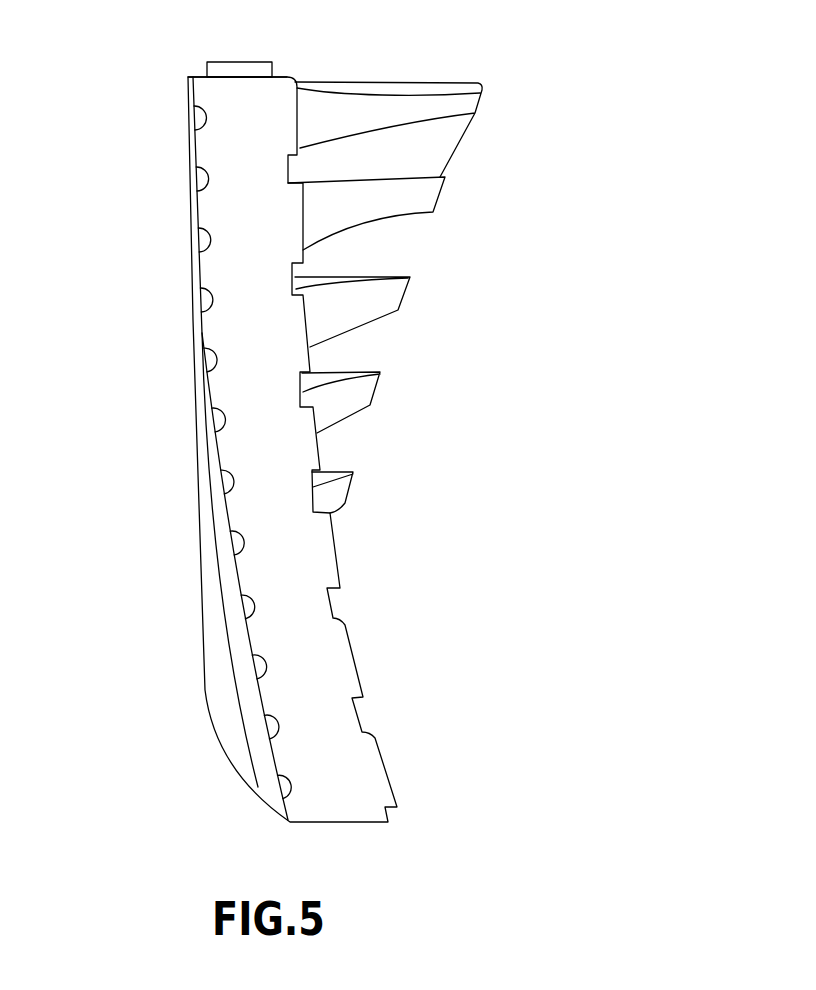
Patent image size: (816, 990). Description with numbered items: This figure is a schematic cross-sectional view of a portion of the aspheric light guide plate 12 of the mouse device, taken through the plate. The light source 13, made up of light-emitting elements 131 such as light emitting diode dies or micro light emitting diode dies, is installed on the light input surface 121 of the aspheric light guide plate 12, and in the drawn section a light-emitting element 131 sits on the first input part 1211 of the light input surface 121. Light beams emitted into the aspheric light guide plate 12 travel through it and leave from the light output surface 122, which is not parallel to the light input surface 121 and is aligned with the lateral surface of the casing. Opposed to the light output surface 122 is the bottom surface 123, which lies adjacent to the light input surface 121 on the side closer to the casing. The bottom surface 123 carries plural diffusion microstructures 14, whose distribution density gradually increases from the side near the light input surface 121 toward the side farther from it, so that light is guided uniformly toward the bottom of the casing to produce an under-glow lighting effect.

The aspheric light guide plate 12 is at (268, 421).
The light source 13 is at (288, 49).
The light-emitting elements 131 is at (242, 68).
The light input surface 121 is at (166, 111).
The first input part 1211 is at (226, 83).
The light output surface 122 is at (308, 308).
The bottom surface 123 is at (202, 332).
The diffusion microstructures 14 is at (263, 727).